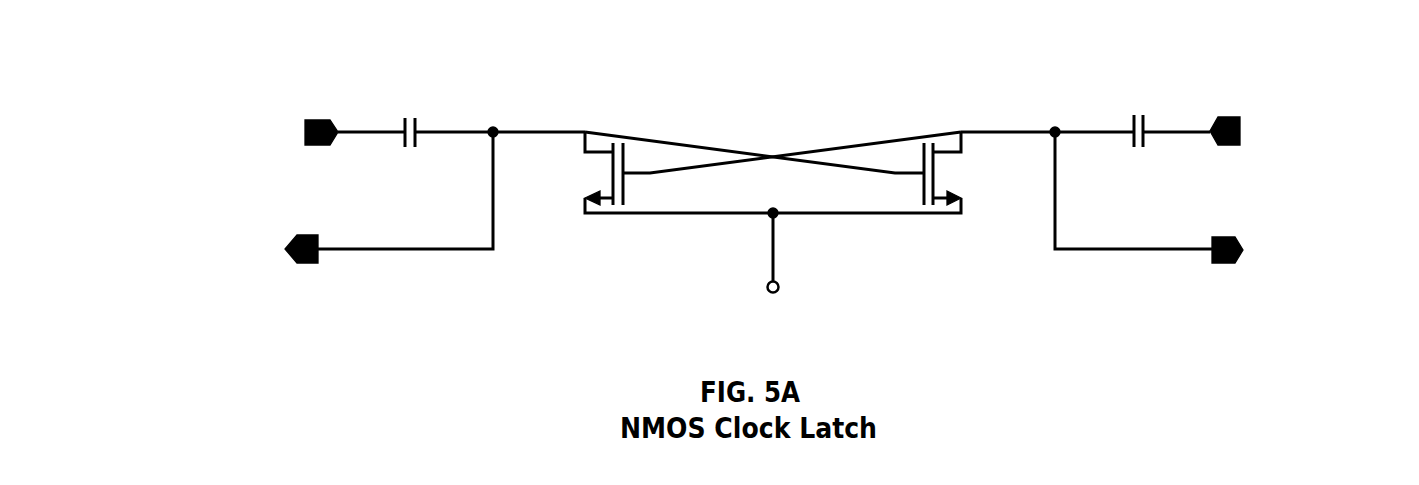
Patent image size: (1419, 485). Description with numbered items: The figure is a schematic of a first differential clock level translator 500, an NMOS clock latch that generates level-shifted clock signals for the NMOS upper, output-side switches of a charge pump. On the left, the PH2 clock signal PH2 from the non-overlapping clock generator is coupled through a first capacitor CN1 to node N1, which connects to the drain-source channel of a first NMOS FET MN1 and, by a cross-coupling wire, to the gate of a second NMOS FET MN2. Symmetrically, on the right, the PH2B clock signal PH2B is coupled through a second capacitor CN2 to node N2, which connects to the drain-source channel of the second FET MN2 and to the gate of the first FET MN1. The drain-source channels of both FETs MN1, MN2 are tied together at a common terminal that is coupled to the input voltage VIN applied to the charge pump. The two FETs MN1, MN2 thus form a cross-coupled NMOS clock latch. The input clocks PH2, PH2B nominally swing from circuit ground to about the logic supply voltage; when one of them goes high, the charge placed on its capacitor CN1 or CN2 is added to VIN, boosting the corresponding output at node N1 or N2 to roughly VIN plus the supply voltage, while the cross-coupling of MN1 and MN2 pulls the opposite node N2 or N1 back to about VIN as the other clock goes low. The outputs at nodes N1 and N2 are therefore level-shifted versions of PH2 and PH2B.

The first differential clock level translator 500 is at (170, 51).
The PH2 clock signal PH2 is at (293, 132).
The PH2B clock signal PH2B is at (1260, 132).
The first capacitor CN1 is at (409, 115).
The second capacitor CN2 is at (1138, 114).
The node N1 is at (413, 168).
The node N2 is at (1127, 168).
The first NMOS FET MN1 is at (590, 168).
The second NMOS FET MN2 is at (956, 168).
The input voltage VIN is at (773, 273).